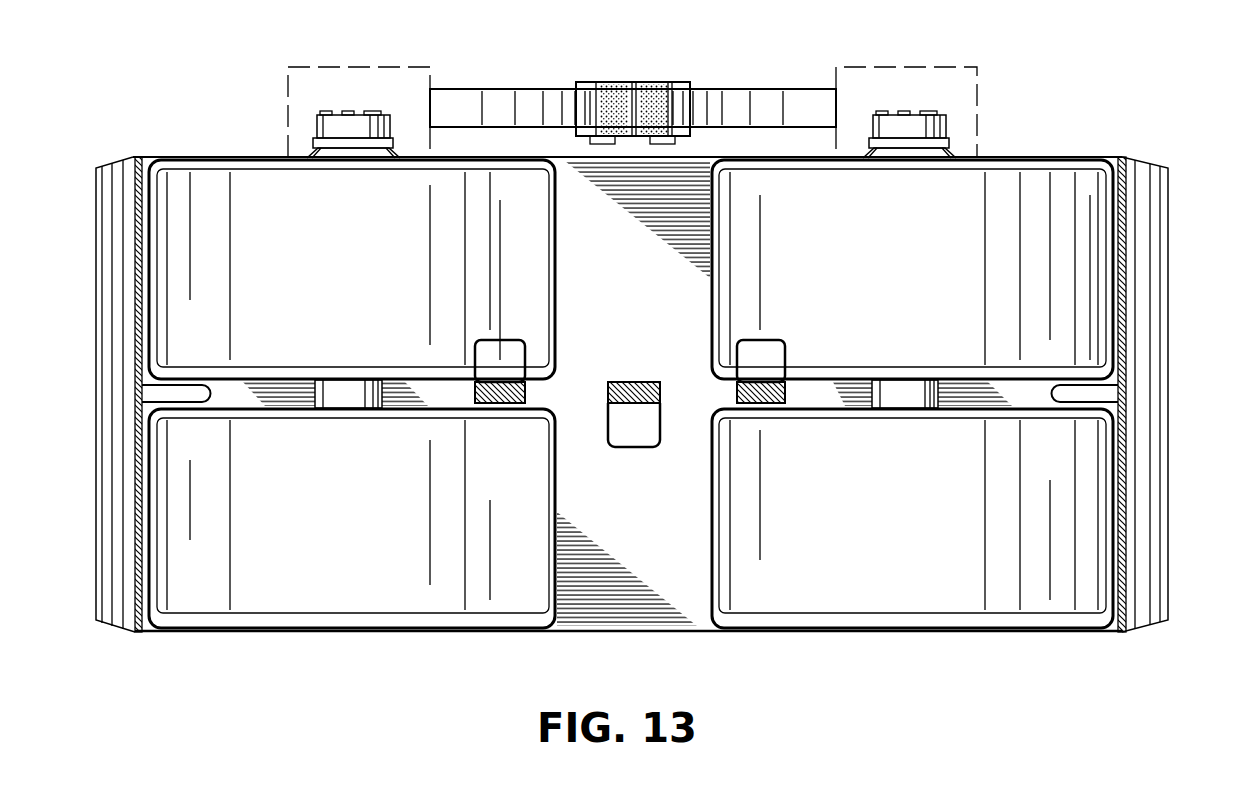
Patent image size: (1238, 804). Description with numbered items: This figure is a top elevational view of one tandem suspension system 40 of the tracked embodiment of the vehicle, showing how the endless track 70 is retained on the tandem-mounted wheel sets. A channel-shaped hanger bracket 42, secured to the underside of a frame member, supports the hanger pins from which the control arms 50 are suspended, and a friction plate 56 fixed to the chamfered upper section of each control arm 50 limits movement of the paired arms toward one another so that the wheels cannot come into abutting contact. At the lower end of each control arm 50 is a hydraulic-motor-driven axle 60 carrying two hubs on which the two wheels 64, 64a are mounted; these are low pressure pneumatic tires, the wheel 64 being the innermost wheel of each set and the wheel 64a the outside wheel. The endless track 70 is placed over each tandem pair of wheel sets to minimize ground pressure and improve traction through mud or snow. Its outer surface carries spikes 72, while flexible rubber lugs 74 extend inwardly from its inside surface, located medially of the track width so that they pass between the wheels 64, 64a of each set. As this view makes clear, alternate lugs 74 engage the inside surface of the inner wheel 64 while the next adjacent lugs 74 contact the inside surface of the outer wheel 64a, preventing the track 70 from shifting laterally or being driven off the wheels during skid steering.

The tandem suspension system 40 is at (659, 72).
The channel-shaped hanger bracket 42 is at (642, 93).
The control arm 50 is at (528, 88).
The friction plate 56 is at (613, 93).
The axle 60 is at (385, 392).
The wheel 64 is at (512, 258).
The wheel 64a is at (540, 487).
The endless track 70 is at (1174, 200).
The spikes 72 is at (1168, 326).
The flexible rubber lugs 74 is at (480, 340).